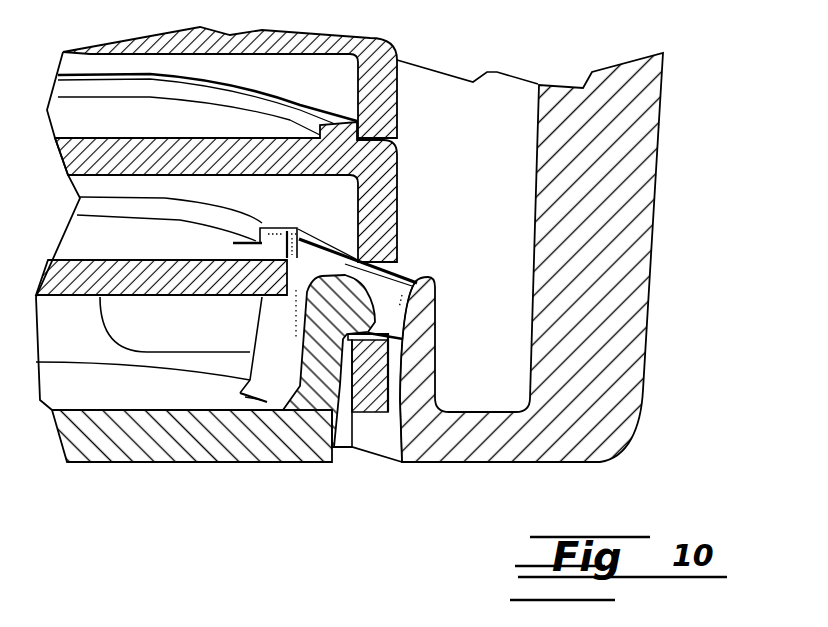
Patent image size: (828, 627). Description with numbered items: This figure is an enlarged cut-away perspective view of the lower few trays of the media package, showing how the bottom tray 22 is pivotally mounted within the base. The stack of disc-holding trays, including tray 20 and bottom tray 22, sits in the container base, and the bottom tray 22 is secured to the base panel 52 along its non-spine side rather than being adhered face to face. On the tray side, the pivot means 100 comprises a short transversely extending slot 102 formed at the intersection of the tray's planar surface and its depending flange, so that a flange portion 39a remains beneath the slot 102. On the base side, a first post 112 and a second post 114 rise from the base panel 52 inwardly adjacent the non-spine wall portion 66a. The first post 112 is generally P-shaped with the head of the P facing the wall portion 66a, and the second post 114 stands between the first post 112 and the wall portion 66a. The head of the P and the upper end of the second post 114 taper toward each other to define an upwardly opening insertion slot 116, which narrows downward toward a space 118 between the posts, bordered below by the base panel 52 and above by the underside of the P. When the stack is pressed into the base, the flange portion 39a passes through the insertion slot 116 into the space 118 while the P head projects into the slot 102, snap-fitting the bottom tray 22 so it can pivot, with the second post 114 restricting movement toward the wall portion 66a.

The disc-holding tray 20 is at (273, 157).
The bottom tray 22 is at (131, 282).
The base panel 52 is at (173, 435).
The non-spine wall portion 66a is at (623, 340).
The means on the non-spine side of bottom tray 100 is at (330, 292).
The slot 102 is at (302, 255).
The first post 112 is at (330, 349).
The second post 114 is at (430, 353).
The insertion slot 116 is at (383, 290).
The space 118 is at (343, 433).
The flange portion 39a is at (360, 414).